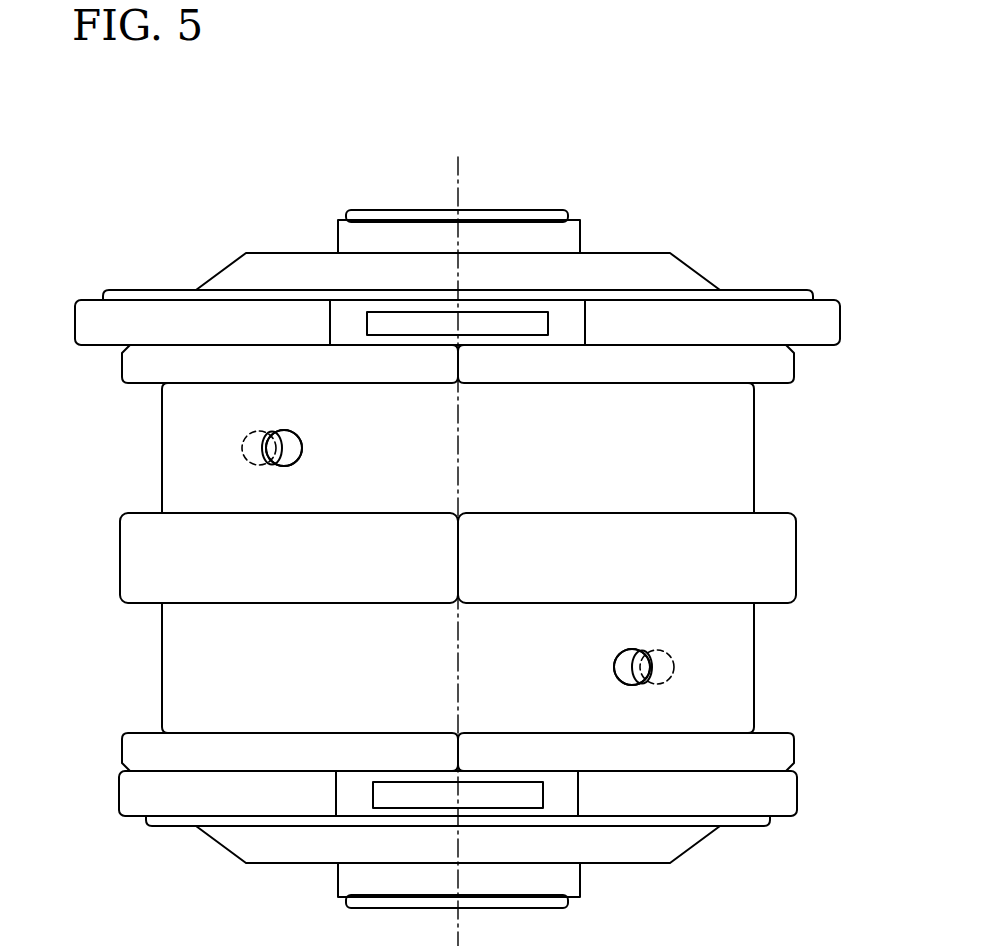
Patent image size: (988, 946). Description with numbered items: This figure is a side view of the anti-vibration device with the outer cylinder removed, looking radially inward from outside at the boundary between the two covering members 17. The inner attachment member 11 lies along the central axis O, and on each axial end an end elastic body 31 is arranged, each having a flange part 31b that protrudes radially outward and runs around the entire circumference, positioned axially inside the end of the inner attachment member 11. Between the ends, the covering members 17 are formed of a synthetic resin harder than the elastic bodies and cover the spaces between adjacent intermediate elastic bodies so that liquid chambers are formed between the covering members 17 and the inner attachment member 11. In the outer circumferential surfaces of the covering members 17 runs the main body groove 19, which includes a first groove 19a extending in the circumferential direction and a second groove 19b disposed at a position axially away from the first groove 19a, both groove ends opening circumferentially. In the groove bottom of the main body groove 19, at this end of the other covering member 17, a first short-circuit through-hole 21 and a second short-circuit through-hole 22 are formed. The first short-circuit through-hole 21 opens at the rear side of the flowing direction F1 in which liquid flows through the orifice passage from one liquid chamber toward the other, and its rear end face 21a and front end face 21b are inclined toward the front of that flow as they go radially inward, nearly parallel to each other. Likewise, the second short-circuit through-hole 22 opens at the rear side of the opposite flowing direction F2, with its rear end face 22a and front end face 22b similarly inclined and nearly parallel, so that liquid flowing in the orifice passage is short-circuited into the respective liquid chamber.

The central axis O is at (458, 180).
The inner attachment member 11 is at (559, 210).
The covering member 17 is at (108, 553).
The main body groove 19 is at (150, 437).
The first groove 19a is at (755, 415).
The second groove 19b is at (162, 421).
The first short-circuit through-hole 21 is at (288, 426).
The rear end face 21a is at (297, 447).
The front end face 21b is at (252, 448).
The second short-circuit through-hole 22 is at (628, 690).
The rear end face 22a is at (620, 672).
The front end face 22b is at (663, 668).
The end elastic body 31 is at (838, 296).
The flange part 31b is at (74, 322).
The flowing direction F1 is at (702, 467).
The flowing direction F2 is at (213, 669).